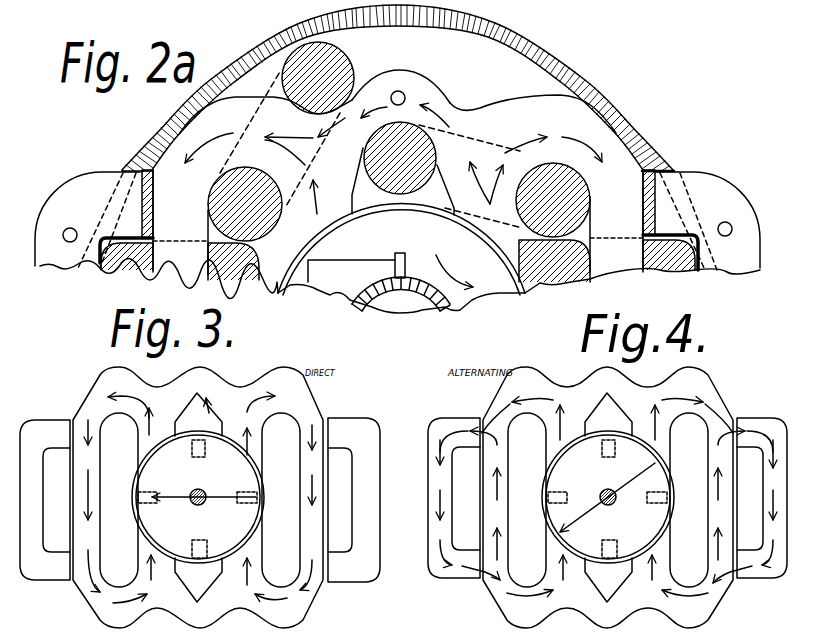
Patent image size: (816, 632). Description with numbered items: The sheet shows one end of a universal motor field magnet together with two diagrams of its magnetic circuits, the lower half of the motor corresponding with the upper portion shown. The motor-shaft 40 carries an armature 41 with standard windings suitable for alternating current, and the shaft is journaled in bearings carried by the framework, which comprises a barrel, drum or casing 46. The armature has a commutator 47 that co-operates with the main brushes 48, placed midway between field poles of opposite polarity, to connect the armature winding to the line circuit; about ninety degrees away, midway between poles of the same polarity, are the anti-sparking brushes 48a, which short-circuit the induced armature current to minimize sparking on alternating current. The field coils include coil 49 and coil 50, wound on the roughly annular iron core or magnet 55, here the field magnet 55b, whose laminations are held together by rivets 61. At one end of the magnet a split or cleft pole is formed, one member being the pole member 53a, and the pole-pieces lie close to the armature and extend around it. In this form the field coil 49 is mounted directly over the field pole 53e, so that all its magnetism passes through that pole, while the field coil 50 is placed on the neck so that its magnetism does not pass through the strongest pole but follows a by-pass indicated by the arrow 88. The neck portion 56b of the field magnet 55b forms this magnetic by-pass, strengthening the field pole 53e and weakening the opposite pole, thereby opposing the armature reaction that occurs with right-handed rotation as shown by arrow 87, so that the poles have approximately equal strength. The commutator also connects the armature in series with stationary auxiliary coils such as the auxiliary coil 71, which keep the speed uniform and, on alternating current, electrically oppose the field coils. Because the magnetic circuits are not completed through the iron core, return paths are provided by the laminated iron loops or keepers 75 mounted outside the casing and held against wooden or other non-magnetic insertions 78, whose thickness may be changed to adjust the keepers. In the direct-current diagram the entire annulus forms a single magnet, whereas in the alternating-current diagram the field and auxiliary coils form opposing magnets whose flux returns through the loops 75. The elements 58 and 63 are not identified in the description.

In FIG. 3, the motor-shaft 40 is at (202, 491).
In FIG. 4, the motor-shaft 40 is at (600, 493).
In FIG. 2A, the armature 41 is at (525, 287).
In FIG. 3, the armature 41 is at (258, 526).
In FIG. 4, the armature 41 is at (671, 521).
In FIG. 2A, the casing 46 is at (599, 83).
In FIG. 2A, the commutator 47 is at (432, 311).
In FIG. 3, the main brushes 48 is at (153, 488).
In FIG. 4, the main brushes 48 is at (556, 492).
In FIG. 2A, the anti-sparking brushes 48a is at (397, 253).
In FIG. 3, the anti-sparking brushes 48a is at (192, 452).
In FIG. 4, the anti-sparking brushes 48a is at (605, 438).
In FIG. 2A, the field coil 49 is at (590, 197).
In FIG. 2A, the field coil 50 is at (208, 210).
In FIG. 2A, the split pole member 53a is at (280, 152).
In FIG. 2A, the field pole 53e is at (436, 176).
In FIG. 3, the magnet 55 is at (93, 397).
In FIG. 4, the magnet 55 is at (492, 410).
In FIG. 2A, the field magnet 55b is at (180, 133).
In FIG. 2A, the neck portion 56b is at (420, 82).
In FIG. 2A, the roller 58 is at (591, 255).
In FIG. 2A, the rivets 61 is at (63, 233).
In FIG. 2A, the end piece 63 is at (628, 126).
In FIG. 2A, the auxiliary coil 71 is at (208, 258).
In FIG. 2A, the laminated iron loops 75 is at (80, 192).
In FIG. 3, the laminated iron loops 75 is at (350, 425).
In FIG. 4, the laminated iron loops 75 is at (757, 428).
In FIG. 2A, the non-magnetic insertions 78 is at (644, 203).
In FIG. 2A, the arrow 87 is at (401, 282).
In FIG. 2A, the arrow 88 is at (444, 116).